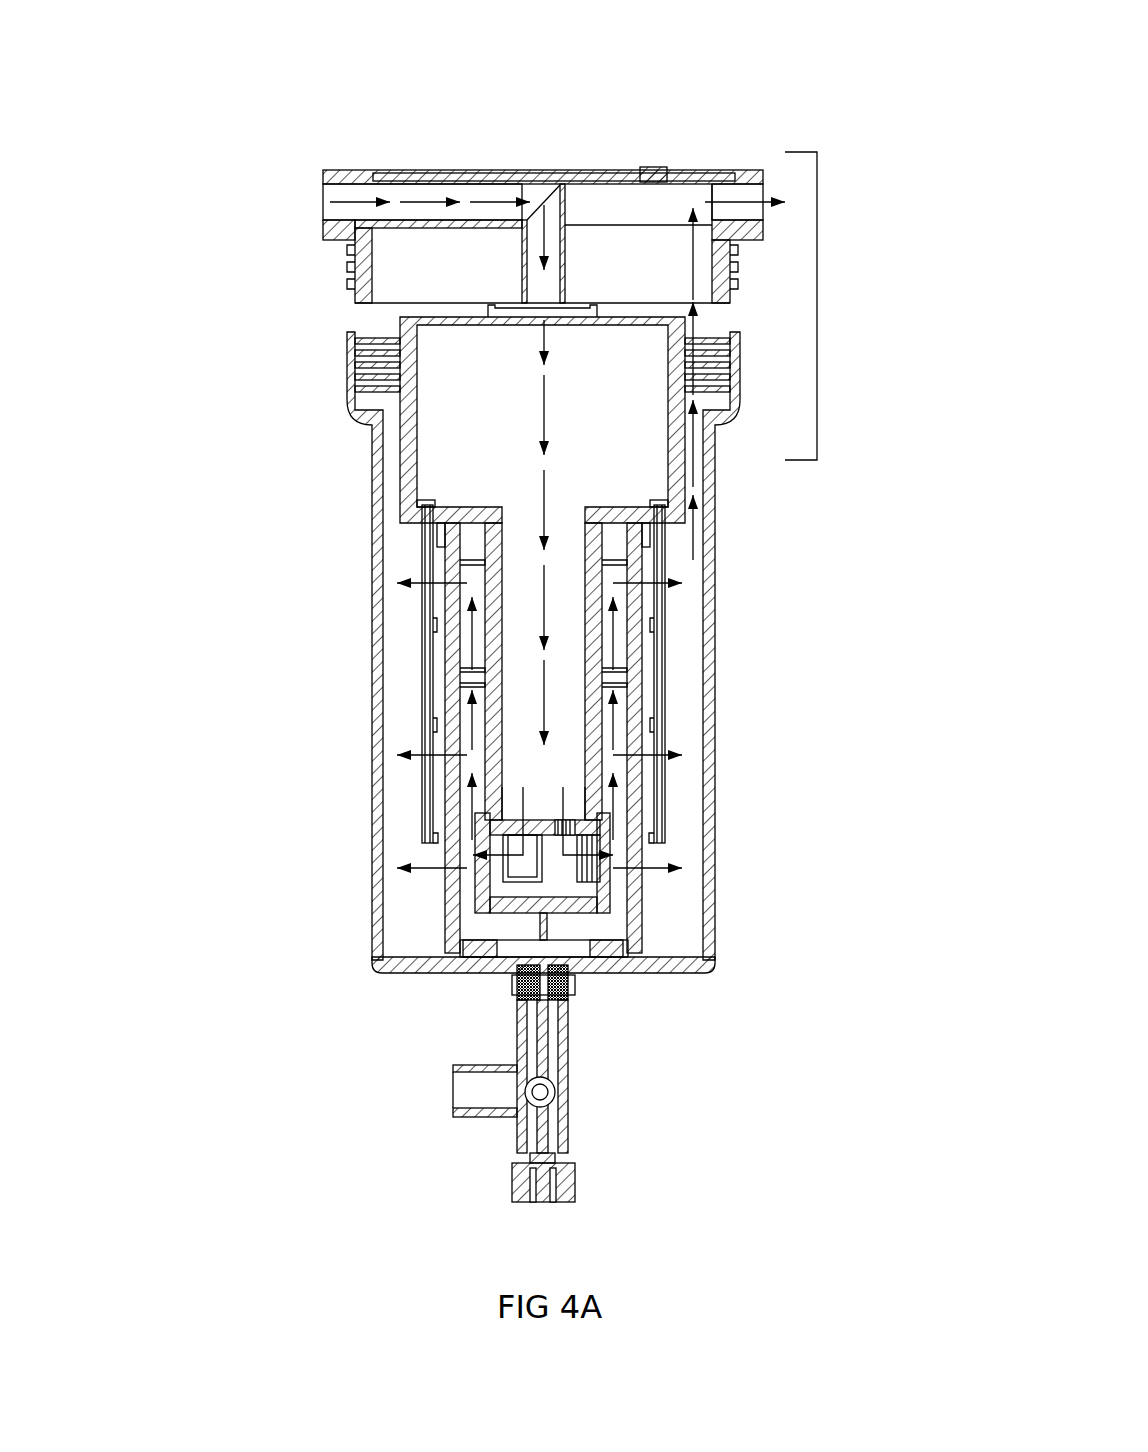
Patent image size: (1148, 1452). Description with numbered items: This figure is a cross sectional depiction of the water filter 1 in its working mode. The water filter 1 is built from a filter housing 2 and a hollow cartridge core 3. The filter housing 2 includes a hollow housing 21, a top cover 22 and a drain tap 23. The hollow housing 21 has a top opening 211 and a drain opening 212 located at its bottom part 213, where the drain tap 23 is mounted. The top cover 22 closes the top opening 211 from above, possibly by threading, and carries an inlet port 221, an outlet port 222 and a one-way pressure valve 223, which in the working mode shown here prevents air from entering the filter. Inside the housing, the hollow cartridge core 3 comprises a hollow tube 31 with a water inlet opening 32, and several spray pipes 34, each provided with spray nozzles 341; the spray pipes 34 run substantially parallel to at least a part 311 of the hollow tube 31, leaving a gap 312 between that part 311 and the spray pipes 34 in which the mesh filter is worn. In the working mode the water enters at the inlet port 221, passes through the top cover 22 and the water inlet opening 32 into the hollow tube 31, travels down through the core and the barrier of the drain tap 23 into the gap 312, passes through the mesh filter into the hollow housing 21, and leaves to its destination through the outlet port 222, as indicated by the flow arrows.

The water filter 1 is at (283, 158).
The filter housing 2 is at (712, 651).
The hollow housing 21 is at (712, 578).
The top opening 211 is at (378, 328).
The drain opening 212 is at (522, 957).
The bottom part 213 is at (655, 972).
The top cover 22 is at (480, 170).
The inlet port 221 is at (332, 210).
The outlet port 222 is at (730, 200).
The one-way pressure valve 223 is at (652, 168).
The drain tap 23 is at (568, 1122).
The hollow cartridge core 3 is at (668, 503).
The hollow tube 31 is at (412, 460).
The part of the hollow tube 311 is at (460, 743).
The gap 312 is at (438, 812).
The water inlet opening 32 is at (548, 312).
The spray pipes 34 is at (430, 668).
The spray nozzles 341 is at (430, 625).